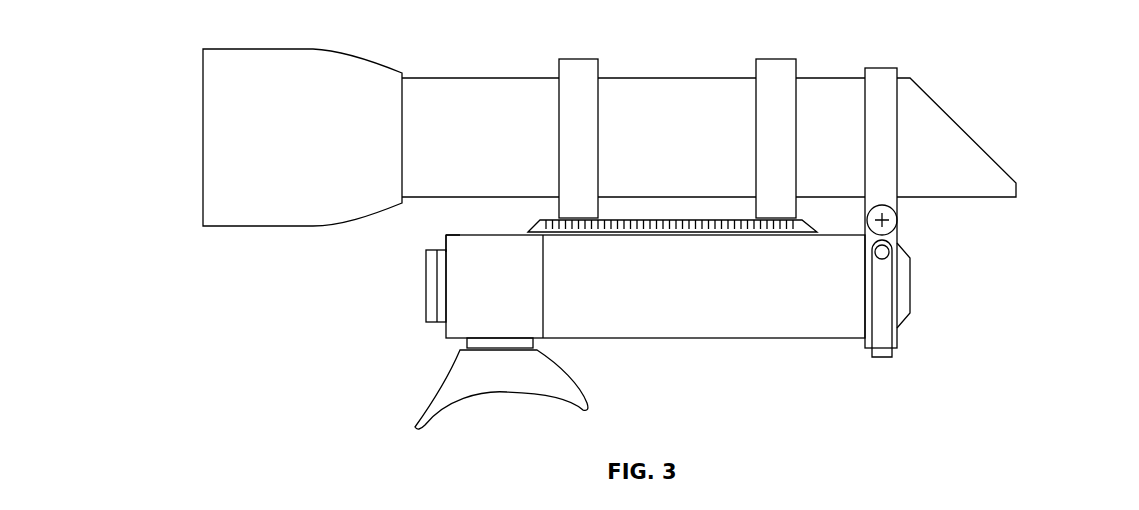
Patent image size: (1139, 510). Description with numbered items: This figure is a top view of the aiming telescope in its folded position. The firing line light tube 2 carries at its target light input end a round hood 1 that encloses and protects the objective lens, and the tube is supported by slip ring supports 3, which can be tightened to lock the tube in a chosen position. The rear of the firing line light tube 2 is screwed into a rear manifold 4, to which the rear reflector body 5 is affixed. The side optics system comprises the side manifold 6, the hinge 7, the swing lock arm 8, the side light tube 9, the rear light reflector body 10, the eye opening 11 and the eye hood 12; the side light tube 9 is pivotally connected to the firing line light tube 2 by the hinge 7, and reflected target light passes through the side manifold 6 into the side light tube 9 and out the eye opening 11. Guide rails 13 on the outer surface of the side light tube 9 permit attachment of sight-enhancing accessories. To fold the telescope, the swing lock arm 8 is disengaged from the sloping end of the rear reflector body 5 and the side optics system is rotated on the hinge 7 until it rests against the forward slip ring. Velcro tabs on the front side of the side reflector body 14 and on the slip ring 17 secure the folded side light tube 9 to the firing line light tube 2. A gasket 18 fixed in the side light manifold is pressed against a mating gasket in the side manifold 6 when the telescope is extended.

The round hood 1 is at (277, 219).
The firing line light tube 2 is at (483, 85).
The slip ring supports 3 is at (598, 63).
The rear manifold 4 is at (897, 65).
The rear reflector body 5 is at (965, 127).
The side manifold 6 is at (900, 235).
The hinge 7 is at (900, 214).
The swing lock arm 8 is at (887, 357).
The side light tube 9 is at (764, 338).
The rear light reflector body 10 is at (442, 246).
The eye opening 11 is at (540, 345).
The eye hood 12 is at (592, 405).
The guide rails 13 is at (427, 288).
The side reflector body 14 is at (530, 227).
The slip ring 17 is at (602, 219).
The gasket 18 is at (915, 288).